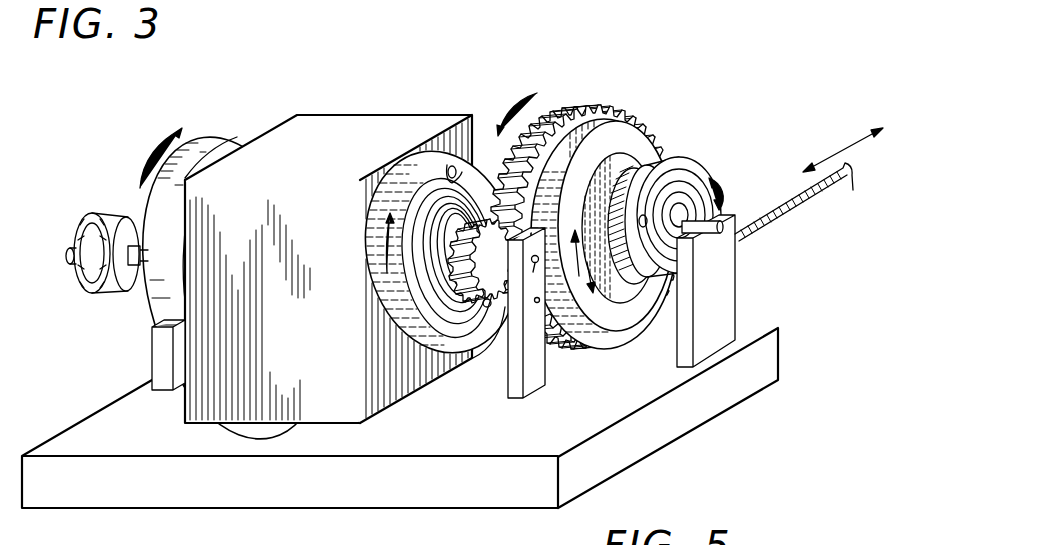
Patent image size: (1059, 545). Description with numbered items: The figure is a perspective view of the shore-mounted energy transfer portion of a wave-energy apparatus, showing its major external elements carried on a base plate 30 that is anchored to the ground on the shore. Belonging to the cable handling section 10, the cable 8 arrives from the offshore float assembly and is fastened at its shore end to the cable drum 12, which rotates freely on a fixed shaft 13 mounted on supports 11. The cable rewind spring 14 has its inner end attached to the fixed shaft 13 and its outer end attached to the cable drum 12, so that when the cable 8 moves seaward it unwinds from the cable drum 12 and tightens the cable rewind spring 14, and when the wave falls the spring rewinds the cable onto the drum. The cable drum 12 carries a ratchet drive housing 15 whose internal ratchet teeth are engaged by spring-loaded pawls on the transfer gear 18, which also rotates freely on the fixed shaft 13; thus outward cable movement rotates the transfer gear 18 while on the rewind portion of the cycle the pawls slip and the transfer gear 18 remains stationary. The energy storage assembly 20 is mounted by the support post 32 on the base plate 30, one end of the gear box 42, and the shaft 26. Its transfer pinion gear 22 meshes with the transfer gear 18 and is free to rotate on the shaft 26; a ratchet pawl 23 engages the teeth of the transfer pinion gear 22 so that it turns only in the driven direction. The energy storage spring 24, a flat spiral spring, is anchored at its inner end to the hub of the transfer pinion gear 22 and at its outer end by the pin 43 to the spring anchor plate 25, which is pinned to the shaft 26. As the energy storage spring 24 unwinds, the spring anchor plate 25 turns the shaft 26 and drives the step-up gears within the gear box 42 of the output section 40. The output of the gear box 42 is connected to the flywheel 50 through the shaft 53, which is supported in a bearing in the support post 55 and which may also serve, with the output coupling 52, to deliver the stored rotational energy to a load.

The cable 8 is at (803, 190).
The cable handling section 10 is at (665, 222).
The supports 11 is at (730, 292).
The cable drum 12 is at (680, 166).
The fixed shaft 13 is at (722, 232).
The cable rewind spring 14 is at (717, 202).
The ratchet drive housing 15 is at (655, 147).
The transfer gear 18 is at (596, 110).
The energy storage assembly 20 is at (421, 436).
The transfer pinion gear 22 is at (481, 261).
The ratchet pawl 23 is at (488, 308).
The energy storage spring 24 is at (473, 357).
The spring anchor plate 25 is at (395, 330).
The shaft 26 is at (575, 283).
The base plate 30 is at (777, 340).
The support post 32 is at (541, 320).
The output section 40 is at (318, 93).
The gear box 42 is at (442, 222).
The pin 43 is at (458, 174).
The flywheel 50 is at (238, 140).
The output coupling 52 is at (113, 225).
The shaft 53 is at (68, 256).
The support post 55 is at (152, 358).